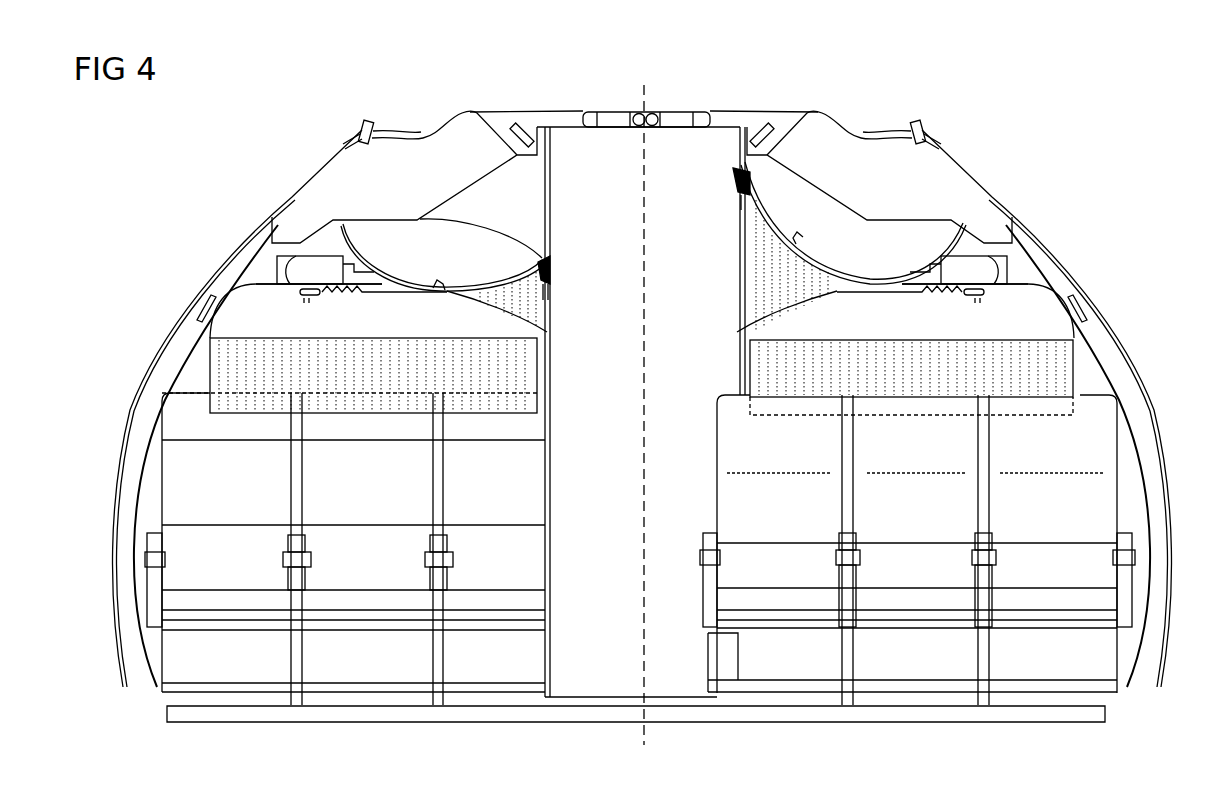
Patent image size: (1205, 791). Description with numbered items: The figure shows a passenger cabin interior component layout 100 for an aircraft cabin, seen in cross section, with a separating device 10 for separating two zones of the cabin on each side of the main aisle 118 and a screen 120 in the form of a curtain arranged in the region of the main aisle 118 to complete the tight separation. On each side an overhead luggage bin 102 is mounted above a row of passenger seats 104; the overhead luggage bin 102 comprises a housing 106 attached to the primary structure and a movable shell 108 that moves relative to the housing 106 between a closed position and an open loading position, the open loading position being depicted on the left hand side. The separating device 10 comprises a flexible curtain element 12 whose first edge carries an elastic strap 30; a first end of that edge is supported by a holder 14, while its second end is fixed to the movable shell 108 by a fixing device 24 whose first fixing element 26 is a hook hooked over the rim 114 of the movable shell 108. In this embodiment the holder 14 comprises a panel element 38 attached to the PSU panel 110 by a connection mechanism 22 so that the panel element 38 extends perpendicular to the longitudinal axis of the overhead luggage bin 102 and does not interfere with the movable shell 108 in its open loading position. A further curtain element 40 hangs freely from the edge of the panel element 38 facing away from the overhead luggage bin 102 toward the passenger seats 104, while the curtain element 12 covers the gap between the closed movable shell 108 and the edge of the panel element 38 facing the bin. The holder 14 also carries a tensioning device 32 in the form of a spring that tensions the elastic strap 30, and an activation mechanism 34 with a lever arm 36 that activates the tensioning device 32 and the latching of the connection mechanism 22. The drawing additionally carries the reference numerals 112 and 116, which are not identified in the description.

The separating device 10 is at (184, 246).
The curtain element 12 is at (530, 300).
The holder 14 is at (200, 365).
The connection mechanism 22 is at (312, 255).
The fixing device 24 is at (552, 292).
The first fixing element 26 is at (550, 262).
The elastic strap 30 is at (487, 282).
The tensioning device 32 is at (347, 312).
The activation mechanism 34 is at (307, 312).
The lever arm 36 is at (305, 293).
The panel element 38 is at (465, 323).
The further curtain element 40 is at (520, 370).
The passenger cabin interior component layout 100 is at (232, 172).
The overhead luggage bin 102 is at (350, 178).
The passenger seats 104 is at (232, 605).
The housing 106 is at (432, 140).
The movable shell 108 is at (490, 240).
The PSU panel 110 is at (290, 262).
The sidewall panel 112 is at (205, 308).
The rim 114 is at (548, 238).
The bin latch 116 is at (437, 290).
The main aisle 118 is at (546, 556).
The screen 120 is at (625, 148).